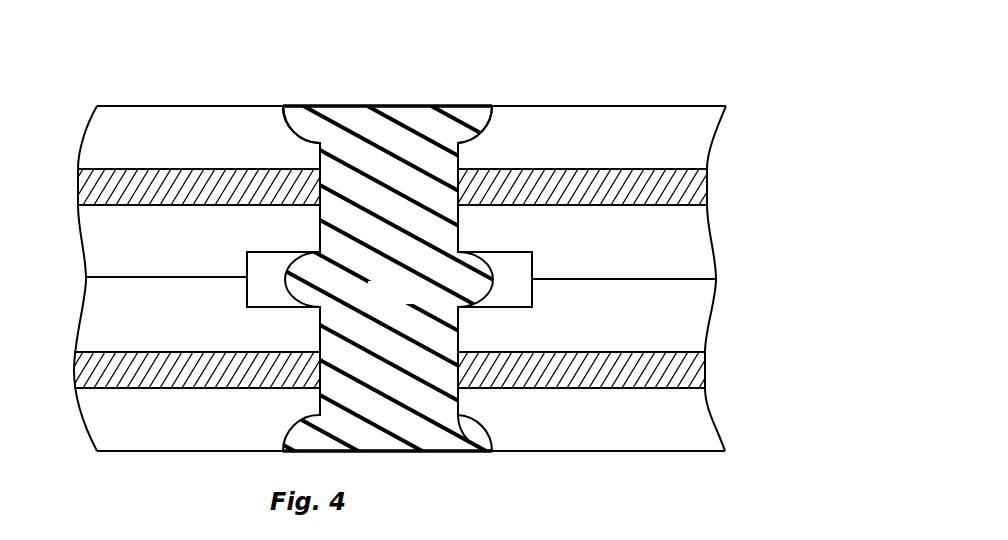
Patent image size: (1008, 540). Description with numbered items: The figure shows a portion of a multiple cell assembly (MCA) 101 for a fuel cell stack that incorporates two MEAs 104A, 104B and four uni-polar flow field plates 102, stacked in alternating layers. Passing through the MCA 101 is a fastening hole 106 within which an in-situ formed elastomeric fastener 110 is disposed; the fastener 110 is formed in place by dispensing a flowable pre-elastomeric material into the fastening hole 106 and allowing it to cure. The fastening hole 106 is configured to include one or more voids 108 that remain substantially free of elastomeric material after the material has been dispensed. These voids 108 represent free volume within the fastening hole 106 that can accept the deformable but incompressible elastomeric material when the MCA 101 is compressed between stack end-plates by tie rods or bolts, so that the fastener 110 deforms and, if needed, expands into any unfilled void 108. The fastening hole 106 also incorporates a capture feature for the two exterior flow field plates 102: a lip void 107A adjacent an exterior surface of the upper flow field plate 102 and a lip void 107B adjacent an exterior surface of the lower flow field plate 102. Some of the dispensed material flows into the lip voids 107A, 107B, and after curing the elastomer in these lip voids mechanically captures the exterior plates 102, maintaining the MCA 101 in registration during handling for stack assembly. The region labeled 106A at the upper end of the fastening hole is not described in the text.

The multiple cell assembly 101 is at (164, 80).
The uni-polar flow field plates 102 is at (633, 118).
The MEA 104A is at (690, 185).
The MEA 104B is at (692, 368).
The fastening hole 106 is at (426, 67).
The via pad 106A is at (452, 103).
The lip void 107A is at (316, 119).
The lip void 107B is at (466, 441).
The voids 108 is at (506, 305).
The in-situ formed elastomeric fastener 110 is at (414, 307).